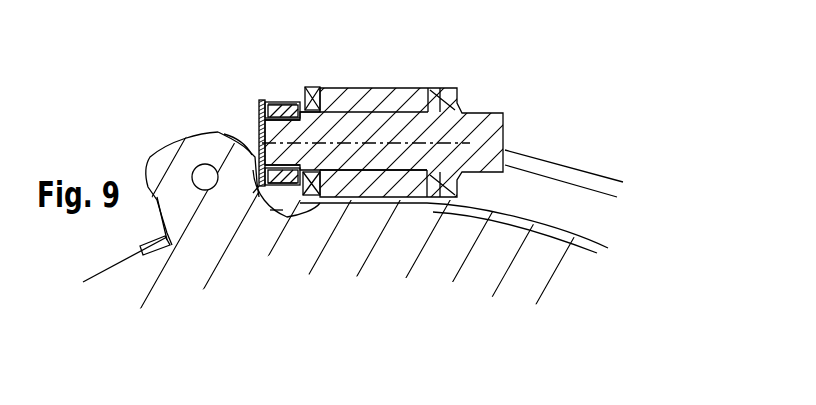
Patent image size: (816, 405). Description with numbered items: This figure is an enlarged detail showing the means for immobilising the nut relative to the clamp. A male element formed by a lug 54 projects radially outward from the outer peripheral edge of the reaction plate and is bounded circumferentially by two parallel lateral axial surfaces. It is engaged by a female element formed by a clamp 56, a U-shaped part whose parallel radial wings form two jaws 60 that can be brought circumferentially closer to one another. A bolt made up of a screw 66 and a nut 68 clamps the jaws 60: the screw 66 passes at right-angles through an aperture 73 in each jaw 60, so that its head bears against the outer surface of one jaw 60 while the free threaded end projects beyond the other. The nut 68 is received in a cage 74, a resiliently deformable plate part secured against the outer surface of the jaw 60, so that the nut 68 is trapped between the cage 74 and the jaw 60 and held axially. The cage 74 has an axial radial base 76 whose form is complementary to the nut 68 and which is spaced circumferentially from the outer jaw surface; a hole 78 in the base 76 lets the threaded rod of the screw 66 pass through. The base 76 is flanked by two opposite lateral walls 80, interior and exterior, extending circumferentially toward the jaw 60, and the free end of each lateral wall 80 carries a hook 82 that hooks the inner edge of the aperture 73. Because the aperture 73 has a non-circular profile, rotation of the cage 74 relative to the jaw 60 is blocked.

The lug 54 is at (380, 97).
The clamp 56 is at (313, 86).
The jaw 60 is at (322, 92).
The screw 66 is at (375, 166).
The nut 68 is at (263, 128).
The aperture 73 is at (335, 175).
The cage 74 is at (277, 99).
The base 76 is at (260, 102).
The hole 78 is at (222, 140).
The lateral wall 80 is at (290, 102).
The hook 82 is at (313, 111).